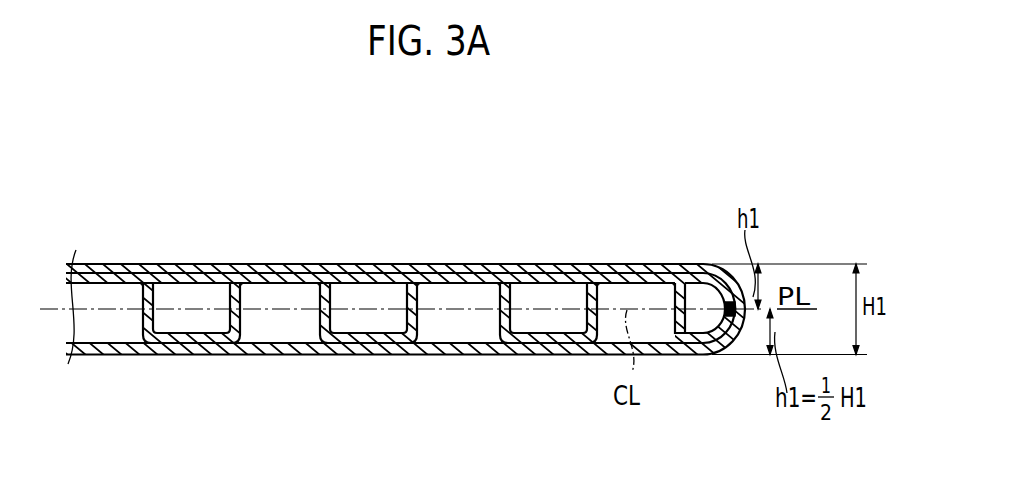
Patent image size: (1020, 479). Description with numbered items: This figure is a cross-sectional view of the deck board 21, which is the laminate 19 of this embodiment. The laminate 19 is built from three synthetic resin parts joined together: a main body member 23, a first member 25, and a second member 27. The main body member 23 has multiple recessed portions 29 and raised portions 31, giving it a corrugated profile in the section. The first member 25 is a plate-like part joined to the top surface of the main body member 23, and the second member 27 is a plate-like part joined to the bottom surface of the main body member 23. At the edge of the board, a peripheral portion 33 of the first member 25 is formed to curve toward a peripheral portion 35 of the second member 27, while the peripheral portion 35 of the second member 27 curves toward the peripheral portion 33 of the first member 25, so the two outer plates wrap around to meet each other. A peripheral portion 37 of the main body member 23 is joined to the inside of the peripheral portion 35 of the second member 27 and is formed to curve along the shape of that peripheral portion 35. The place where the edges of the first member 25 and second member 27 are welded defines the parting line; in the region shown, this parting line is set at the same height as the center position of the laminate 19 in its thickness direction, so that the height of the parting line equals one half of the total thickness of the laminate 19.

The laminate 19 is at (413, 224).
The deck board 21 is at (451, 312).
The main body member 23 is at (283, 210).
The first member 25 is at (486, 255).
The second member 27 is at (450, 363).
The recessed portions 29 is at (194, 337).
The raised portions 31 is at (274, 292).
The peripheral portion of the first member 33 is at (714, 287).
The peripheral portion of the second member 35 is at (733, 337).
The peripheral portion of the main body member 37 is at (727, 313).